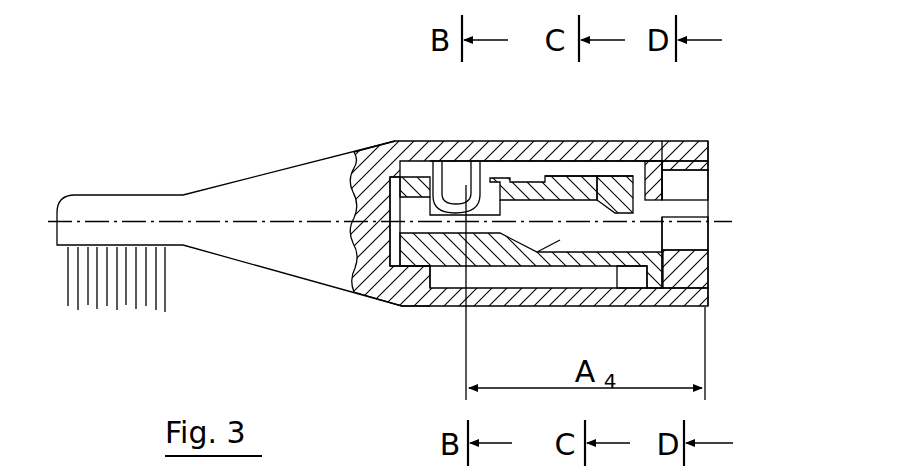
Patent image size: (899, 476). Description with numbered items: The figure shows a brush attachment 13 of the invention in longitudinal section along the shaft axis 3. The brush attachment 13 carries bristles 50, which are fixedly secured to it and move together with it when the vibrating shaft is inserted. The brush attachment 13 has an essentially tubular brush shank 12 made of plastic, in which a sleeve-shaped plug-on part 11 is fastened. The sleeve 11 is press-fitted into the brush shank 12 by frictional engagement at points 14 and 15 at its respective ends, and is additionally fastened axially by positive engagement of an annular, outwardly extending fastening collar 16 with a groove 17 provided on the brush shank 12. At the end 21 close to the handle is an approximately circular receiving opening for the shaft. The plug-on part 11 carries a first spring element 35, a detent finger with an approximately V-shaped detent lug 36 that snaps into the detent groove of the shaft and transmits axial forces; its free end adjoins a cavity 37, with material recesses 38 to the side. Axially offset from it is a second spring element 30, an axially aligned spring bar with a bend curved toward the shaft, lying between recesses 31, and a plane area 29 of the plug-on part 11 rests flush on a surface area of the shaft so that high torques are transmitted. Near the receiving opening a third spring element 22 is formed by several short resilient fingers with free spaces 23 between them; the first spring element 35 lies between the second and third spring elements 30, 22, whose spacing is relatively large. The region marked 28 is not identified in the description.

The shaft axis 3 is at (270, 222).
The plug-on part 11 is at (400, 244).
The brush shank 12 is at (246, 194).
The brush attachment 13 is at (175, 150).
The press-fit point 14 is at (712, 178).
The press-fit point 15 is at (405, 266).
The fastening collar 16 is at (637, 157).
The groove 17 is at (654, 155).
The end 21 is at (728, 206).
The third spring element 22 is at (707, 258).
The free spaces 23 is at (700, 232).
The housing bottom wall 28 is at (405, 320).
The plane area 29 is at (448, 234).
The second spring element 30 is at (470, 192).
The recesses 31 is at (438, 210).
The first spring element 35 is at (560, 208).
The detent lug 36 is at (607, 197).
The cavity 37 is at (620, 195).
The material recesses 38 is at (512, 185).
The bristles 50 is at (160, 318).